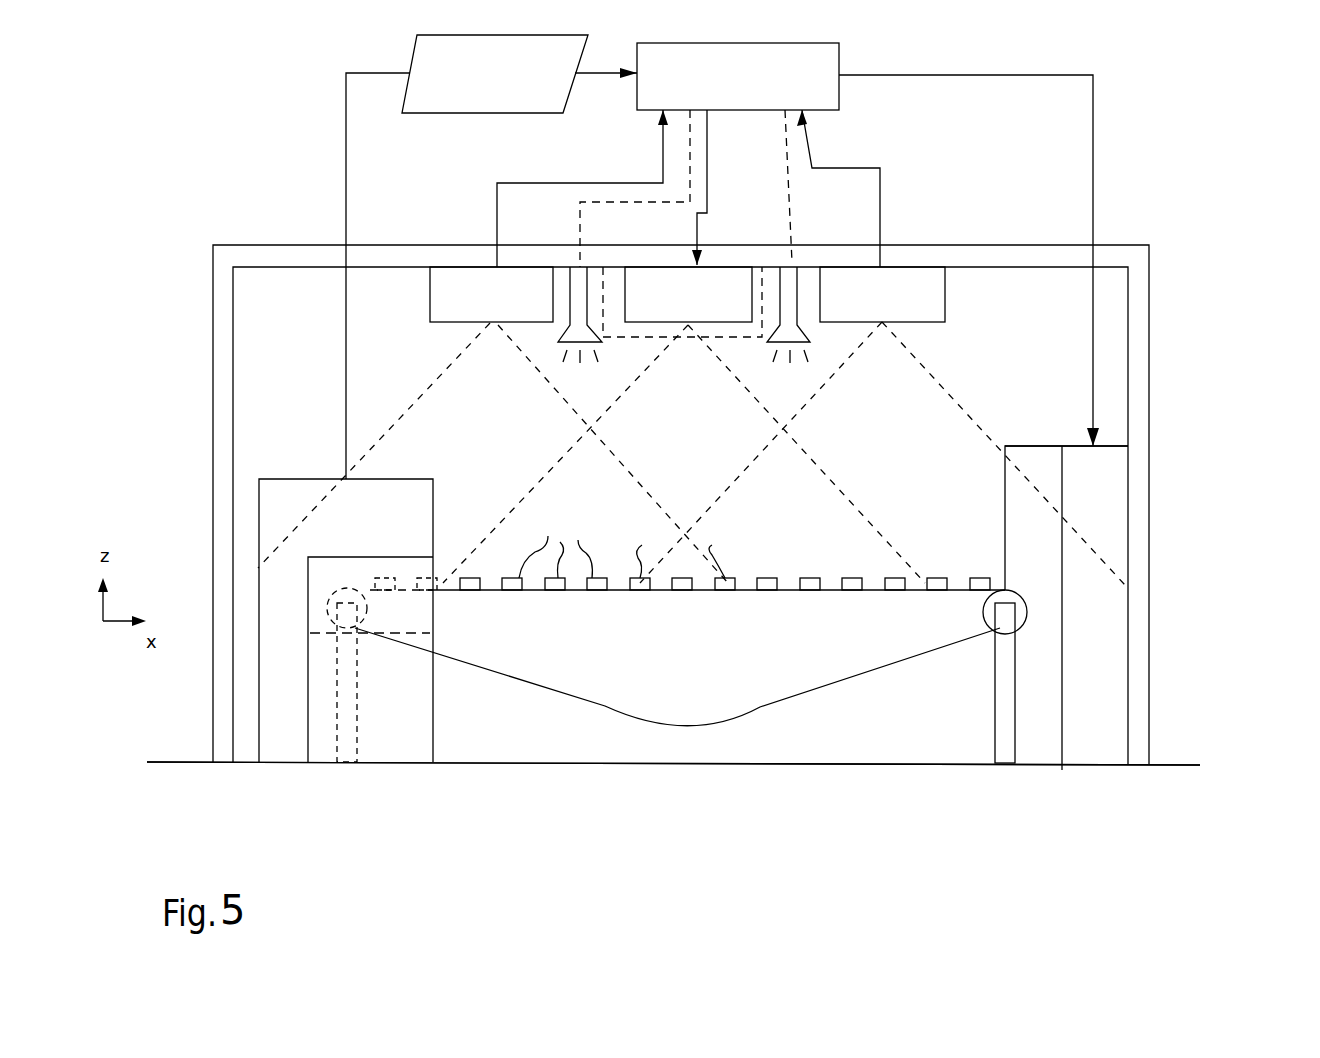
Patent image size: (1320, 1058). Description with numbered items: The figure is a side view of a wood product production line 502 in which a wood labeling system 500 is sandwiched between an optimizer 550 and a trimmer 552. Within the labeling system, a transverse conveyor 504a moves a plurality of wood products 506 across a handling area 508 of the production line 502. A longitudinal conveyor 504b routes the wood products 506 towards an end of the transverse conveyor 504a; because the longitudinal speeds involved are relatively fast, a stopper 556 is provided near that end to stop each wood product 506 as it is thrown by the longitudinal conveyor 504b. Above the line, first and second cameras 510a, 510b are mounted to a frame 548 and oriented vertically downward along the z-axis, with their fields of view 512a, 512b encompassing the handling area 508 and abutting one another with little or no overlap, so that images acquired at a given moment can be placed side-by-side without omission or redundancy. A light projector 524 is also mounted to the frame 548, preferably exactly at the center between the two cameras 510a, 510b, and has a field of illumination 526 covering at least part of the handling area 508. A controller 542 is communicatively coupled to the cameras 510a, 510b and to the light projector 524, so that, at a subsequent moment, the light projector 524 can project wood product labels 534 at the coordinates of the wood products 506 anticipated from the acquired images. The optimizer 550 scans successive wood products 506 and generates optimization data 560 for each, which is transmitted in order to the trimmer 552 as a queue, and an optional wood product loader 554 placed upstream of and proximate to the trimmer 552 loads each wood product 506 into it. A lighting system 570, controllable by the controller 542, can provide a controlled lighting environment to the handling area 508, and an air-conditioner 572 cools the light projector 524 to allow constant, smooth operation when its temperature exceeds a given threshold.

The wood labeling system 500 is at (219, 208).
The production line 502 is at (866, 735).
The transverse conveyor 504a is at (512, 710).
The longitudinal conveyor 504b is at (313, 618).
The wood products 506 is at (555, 544).
The handling area 508 is at (797, 513).
The first camera 510a is at (430, 285).
The second camera 510b is at (962, 268).
The field of view 512a is at (425, 390).
The field of view 512b is at (930, 368).
The light projector 524 is at (648, 265).
The field of illumination 526 is at (588, 425).
The wood product labels 534 is at (676, 550).
The controller 542 is at (839, 48).
The frame 548 is at (1100, 245).
The optimizer 550 is at (283, 495).
The trimmer 552 is at (1115, 487).
The wood product loader 554 is at (1030, 446).
The stopper 556 is at (318, 762).
The optimization data 560 is at (483, 113).
The lighting system 570 is at (574, 265).
The air-conditioner 572 is at (770, 185).